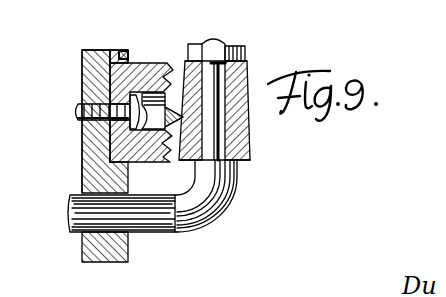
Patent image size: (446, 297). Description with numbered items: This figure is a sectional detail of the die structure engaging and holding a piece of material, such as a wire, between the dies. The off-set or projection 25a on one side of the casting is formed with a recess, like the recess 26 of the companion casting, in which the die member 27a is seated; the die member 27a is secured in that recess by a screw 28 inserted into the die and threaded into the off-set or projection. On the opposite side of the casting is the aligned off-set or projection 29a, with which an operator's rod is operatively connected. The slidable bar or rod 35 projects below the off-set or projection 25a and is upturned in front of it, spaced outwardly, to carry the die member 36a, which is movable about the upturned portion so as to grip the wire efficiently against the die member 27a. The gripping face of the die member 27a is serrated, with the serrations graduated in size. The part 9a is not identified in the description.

The off-set or projection 25a is at (105, 26).
The recess 26 is at (120, 51).
The die member 27a is at (124, 79).
The screw 28 is at (75, 115).
The conical tip element 9a is at (172, 107).
The die member 36a is at (252, 141).
The bar or rod 35 is at (172, 216).
The off-set or projection 29a is at (87, 253).